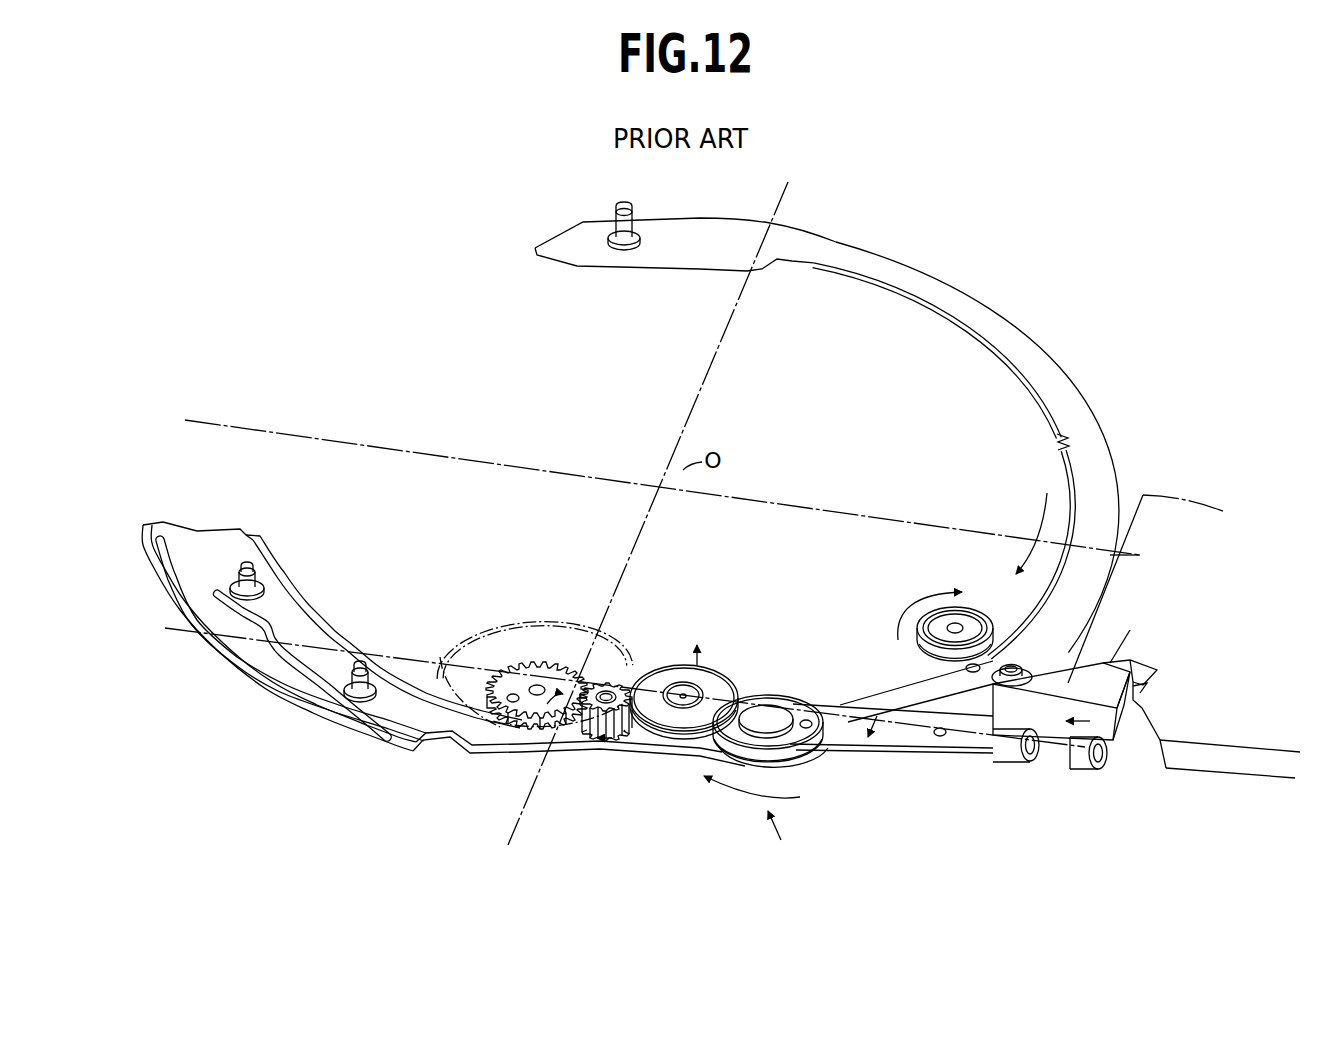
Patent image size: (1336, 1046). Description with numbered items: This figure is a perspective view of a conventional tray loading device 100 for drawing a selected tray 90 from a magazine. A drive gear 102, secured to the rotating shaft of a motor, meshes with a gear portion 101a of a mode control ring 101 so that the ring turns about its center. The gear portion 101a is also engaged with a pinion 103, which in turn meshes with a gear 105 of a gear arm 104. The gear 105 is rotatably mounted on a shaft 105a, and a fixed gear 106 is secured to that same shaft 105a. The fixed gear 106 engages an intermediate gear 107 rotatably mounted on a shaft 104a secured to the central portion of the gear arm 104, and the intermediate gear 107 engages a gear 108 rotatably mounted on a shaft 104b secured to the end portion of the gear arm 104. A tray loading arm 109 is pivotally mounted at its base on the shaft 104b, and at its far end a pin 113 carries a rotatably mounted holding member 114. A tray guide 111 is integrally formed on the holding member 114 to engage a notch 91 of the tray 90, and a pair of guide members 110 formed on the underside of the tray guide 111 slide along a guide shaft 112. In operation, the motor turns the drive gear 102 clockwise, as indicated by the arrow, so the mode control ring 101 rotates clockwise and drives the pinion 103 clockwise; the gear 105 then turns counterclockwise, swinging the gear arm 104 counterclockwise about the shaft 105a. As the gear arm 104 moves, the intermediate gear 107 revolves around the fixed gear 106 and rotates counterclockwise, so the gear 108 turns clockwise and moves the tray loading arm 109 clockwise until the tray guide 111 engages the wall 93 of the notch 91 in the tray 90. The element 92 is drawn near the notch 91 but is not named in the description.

The tray 90 is at (1210, 745).
The notch 91 is at (1147, 660).
The engaging portion 92 is at (1145, 684).
The wall 93 is at (1140, 693).
The tray loading device 100 is at (754, 823).
The mode control ring 101 is at (1095, 407).
The gear portion 101a is at (1056, 441).
The drive gear 102 is at (905, 650).
The pinion 103 is at (620, 685).
The gear arm 104 is at (549, 660).
The shaft 104a is at (690, 690).
The shaft 104b is at (773, 700).
The gear 105 is at (497, 713).
The shaft 105a is at (507, 628).
The fixed gear 106 is at (443, 657).
The intermediate gear 107 is at (737, 686).
The gear 108 is at (803, 760).
The tray loading arm 109 is at (930, 757).
The guide members 110 is at (1080, 767).
The tray guide 111 is at (1122, 665).
The guide shaft 112 is at (1120, 753).
The pin 113 is at (1010, 664).
The holding member 114 is at (1062, 678).